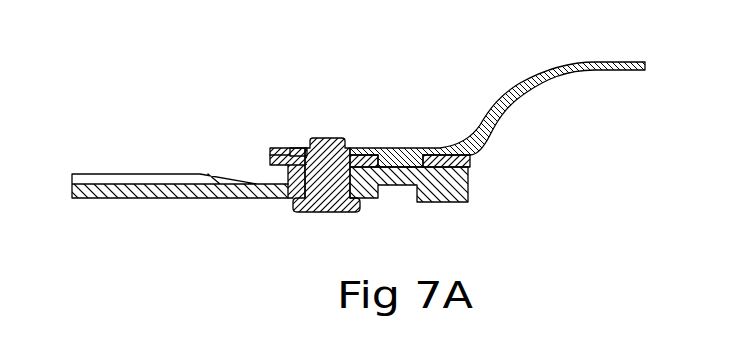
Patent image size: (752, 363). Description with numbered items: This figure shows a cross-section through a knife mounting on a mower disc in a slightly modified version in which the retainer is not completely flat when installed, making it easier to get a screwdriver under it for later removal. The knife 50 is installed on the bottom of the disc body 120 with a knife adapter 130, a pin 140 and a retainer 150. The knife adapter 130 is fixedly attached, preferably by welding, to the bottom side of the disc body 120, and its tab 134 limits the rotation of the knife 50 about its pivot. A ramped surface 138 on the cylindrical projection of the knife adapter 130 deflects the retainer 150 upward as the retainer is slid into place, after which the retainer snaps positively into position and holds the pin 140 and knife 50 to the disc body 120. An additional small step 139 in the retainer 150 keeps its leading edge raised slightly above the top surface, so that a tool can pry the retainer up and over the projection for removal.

The knife 50 is at (148, 198).
The disc body 120 is at (493, 112).
The knife adapter 130 is at (400, 180).
The tab 134 is at (467, 195).
The ramped surface 138 is at (400, 150).
The small step 139 is at (425, 150).
The pin 140 is at (330, 138).
The retainer 150 is at (270, 149).